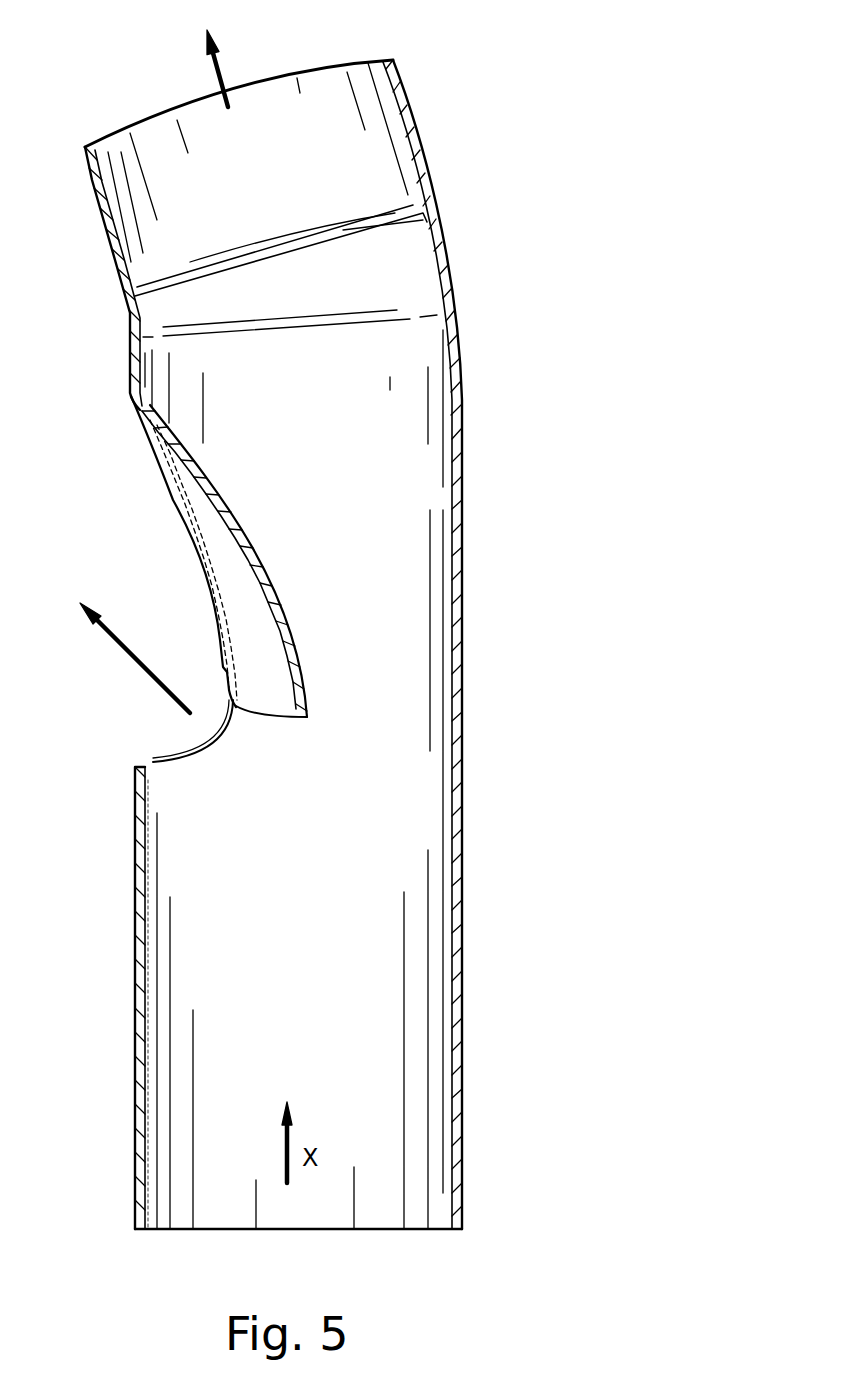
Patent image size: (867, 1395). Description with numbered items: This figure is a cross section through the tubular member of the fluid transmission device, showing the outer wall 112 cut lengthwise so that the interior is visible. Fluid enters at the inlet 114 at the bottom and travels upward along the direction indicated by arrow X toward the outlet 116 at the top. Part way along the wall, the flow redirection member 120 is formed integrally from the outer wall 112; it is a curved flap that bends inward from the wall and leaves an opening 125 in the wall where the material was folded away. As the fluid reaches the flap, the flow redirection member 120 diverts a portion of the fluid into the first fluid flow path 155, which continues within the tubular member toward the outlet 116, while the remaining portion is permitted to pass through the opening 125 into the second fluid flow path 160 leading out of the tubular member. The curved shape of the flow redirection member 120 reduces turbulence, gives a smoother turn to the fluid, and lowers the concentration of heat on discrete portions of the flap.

The outer wall 112 is at (387, 1110).
The inlet 114 is at (387, 1230).
The outlet 116 is at (357, 58).
The flow redirection member 120 is at (167, 528).
The opening 125 is at (152, 755).
The first fluid flow path 155 is at (230, 77).
The second fluid flow path 160 is at (137, 662).